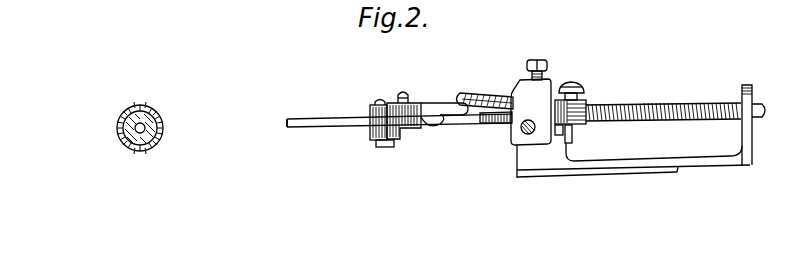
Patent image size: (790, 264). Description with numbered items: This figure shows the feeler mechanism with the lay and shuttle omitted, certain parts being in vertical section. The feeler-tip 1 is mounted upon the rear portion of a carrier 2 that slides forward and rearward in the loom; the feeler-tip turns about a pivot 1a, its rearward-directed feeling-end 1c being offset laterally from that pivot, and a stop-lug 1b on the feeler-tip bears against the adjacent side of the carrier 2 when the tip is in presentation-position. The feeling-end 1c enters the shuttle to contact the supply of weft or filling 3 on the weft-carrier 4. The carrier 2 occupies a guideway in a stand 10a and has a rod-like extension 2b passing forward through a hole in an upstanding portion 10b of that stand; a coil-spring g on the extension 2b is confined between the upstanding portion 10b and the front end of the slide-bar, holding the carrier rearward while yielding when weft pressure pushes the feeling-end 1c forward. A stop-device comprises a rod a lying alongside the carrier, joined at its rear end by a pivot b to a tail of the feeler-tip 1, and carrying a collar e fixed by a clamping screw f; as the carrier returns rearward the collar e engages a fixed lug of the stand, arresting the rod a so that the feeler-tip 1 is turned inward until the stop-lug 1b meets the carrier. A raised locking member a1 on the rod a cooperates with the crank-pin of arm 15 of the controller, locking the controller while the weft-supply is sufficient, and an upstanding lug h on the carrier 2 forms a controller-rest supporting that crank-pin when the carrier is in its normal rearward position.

The feeler-tip 1 is at (338, 128).
The pivot 1a is at (381, 101).
The stop-lug 1b is at (424, 131).
The feeling-end 1c is at (287, 123).
The carrier 2 is at (413, 139).
The rod-like extension 2b is at (764, 119).
The weft-supply 3 is at (120, 113).
The weft-carrier 4 is at (162, 121).
The rod a is at (503, 125).
The locking member a1 is at (428, 101).
The pivot b is at (402, 93).
The collar e is at (588, 100).
The clamping screw f is at (577, 87).
The coil-spring g is at (661, 104).
The upstanding lug h is at (452, 103).
The carrier-stand 10a is at (667, 168).
The second upstanding portion 10b is at (747, 85).
The arm 15 is at (478, 94).